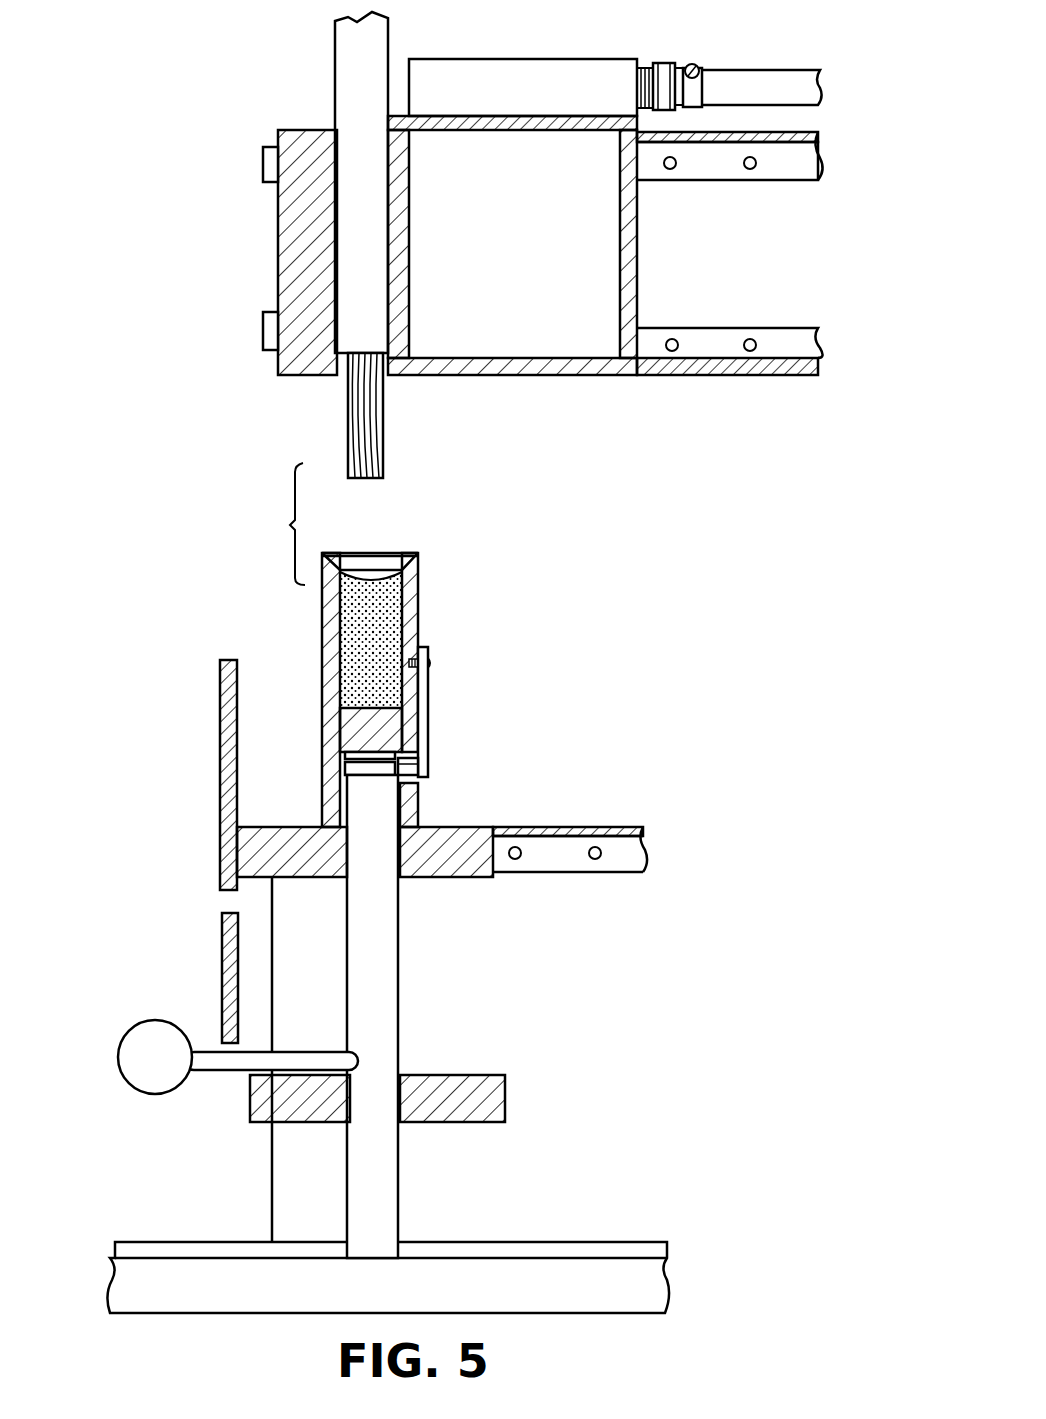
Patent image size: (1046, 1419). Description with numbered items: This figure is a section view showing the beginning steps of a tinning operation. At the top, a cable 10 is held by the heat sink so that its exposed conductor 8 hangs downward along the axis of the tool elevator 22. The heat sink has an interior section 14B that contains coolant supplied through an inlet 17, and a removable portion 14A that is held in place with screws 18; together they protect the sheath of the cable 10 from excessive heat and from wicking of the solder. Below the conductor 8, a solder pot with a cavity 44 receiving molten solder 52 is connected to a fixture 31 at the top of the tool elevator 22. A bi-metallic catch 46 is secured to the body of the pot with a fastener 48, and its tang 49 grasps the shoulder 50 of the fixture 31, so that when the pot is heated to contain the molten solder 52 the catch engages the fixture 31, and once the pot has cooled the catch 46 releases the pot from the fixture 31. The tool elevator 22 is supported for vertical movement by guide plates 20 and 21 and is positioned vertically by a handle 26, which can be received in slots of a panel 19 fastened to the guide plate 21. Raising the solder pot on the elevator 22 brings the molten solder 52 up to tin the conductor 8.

The cable 10 is at (335, 79).
The inlet 17 is at (607, 59).
The removable portion of the heat sink 14A is at (310, 375).
The interior section of the heat sink 14B is at (507, 375).
The screws 18 is at (263, 172).
The conductor 8 is at (383, 456).
The solder pot cavity 44 is at (418, 617).
The molten solder 52 is at (417, 576).
The fastener 48 is at (431, 663).
The bi-metallic catch 46 is at (428, 718).
The shoulder 50 is at (343, 758).
The fixture 31 is at (343, 776).
The tang 49 is at (410, 780).
The tool elevator 22 is at (398, 981).
The panel 19 is at (220, 771).
The guide plate 21 is at (512, 872).
The handle 26 is at (208, 1072).
The guide plate 20 is at (505, 1098).